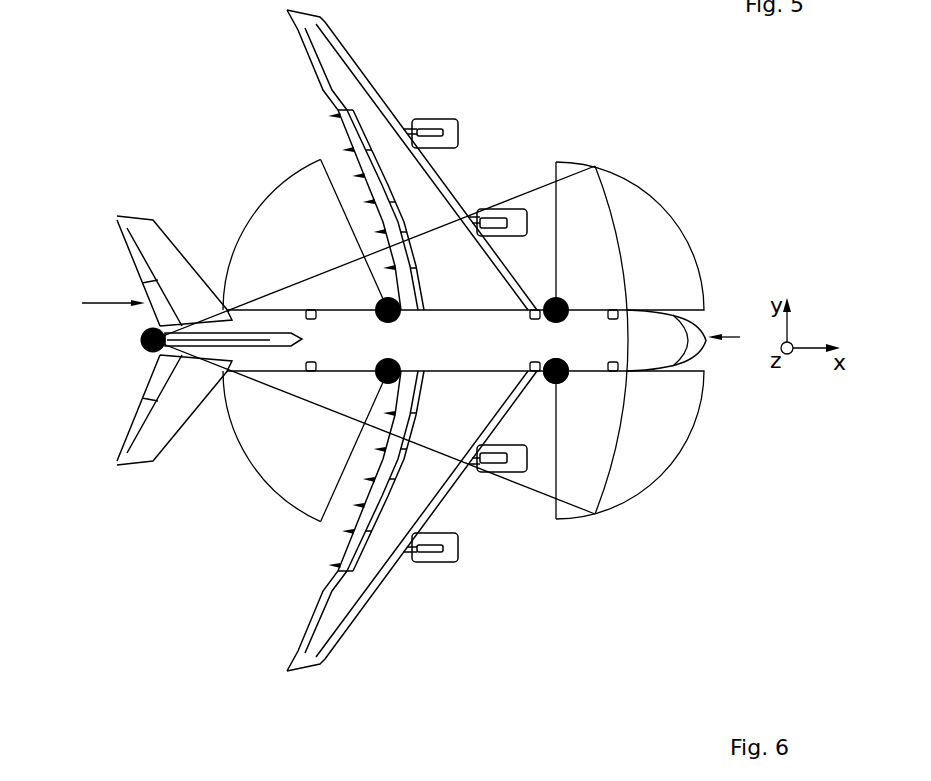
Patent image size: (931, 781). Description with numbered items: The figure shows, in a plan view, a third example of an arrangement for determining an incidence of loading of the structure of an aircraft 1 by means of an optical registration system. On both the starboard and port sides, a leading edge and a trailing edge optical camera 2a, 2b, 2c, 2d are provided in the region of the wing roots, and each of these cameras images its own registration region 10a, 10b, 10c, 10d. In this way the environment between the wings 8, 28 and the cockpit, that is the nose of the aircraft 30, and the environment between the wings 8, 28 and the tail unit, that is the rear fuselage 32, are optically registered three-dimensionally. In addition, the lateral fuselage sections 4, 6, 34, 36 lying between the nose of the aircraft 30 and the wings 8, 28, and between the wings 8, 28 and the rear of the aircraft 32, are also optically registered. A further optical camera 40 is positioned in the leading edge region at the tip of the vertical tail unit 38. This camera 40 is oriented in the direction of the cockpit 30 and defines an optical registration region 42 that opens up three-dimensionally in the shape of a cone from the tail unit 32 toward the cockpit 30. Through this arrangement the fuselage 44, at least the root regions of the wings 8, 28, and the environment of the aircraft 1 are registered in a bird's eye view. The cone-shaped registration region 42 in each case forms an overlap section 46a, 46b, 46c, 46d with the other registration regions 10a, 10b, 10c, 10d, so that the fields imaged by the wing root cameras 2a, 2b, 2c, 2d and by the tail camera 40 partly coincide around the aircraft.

The aircraft 1 is at (100, 128).
The optical camera 2a is at (556, 371).
The optical camera 2b is at (388, 371).
The optical camera 2c is at (556, 310).
The optical camera 2d is at (388, 310).
The lateral fuselage section 4 is at (568, 373).
The lateral fuselage section 6 is at (270, 369).
The wing 8 is at (307, 632).
The registration region 10a is at (645, 447).
The registration region 10b is at (260, 448).
The registration region 10c is at (647, 203).
The registration region 10d is at (258, 237).
The wing 28 is at (307, 47).
The nose of the aircraft 30 is at (739, 339).
The rear fuselage 32 is at (93, 304).
The lateral fuselage section 34 is at (612, 310).
The lateral fuselage section 36 is at (283, 310).
The vertical tail unit 38 is at (210, 340).
The optical camera 40 is at (153, 340).
The optical registration region 42 is at (547, 460).
The fuselage 44 is at (428, 318).
The overlap section 46a is at (570, 450).
The overlap section 46b is at (342, 402).
The overlap section 46c is at (578, 200).
The overlap section 46d is at (340, 280).